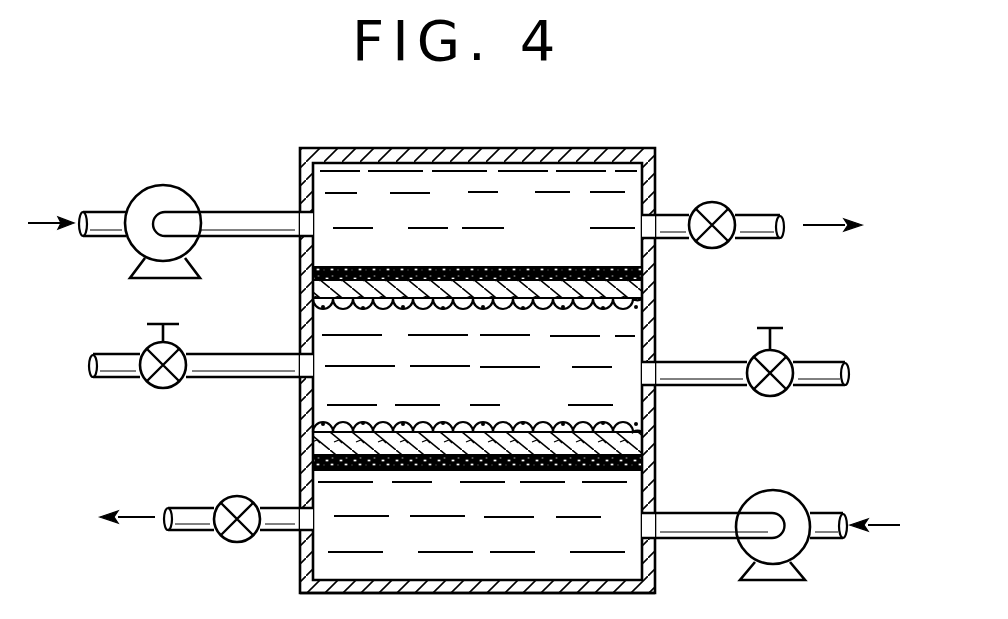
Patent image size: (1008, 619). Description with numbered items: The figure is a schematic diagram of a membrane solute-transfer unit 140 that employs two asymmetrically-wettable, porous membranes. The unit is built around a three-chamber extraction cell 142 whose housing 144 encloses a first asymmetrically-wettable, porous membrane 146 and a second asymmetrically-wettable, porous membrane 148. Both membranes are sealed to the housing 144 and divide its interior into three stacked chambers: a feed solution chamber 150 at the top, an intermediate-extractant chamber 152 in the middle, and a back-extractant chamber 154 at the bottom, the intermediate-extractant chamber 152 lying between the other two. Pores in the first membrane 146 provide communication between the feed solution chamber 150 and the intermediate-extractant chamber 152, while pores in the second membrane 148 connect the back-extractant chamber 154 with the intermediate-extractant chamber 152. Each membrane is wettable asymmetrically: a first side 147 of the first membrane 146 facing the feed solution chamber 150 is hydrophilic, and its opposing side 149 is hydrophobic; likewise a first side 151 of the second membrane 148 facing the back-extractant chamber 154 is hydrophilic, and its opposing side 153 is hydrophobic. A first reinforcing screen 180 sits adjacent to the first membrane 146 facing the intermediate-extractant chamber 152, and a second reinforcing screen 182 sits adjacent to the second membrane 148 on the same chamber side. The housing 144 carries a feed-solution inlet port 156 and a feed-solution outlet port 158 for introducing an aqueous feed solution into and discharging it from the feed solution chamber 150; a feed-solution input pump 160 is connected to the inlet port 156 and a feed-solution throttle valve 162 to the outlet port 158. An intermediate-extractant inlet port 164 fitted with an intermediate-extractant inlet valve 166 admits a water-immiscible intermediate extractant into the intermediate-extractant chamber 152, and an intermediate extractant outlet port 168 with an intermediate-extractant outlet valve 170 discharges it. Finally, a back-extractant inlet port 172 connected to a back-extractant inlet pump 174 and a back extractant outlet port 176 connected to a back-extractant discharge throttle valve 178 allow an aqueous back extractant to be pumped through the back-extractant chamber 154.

The membrane solute-transfer unit 140 is at (764, 114).
The three-chamber extraction cell 142 is at (622, 150).
The housing 144 is at (300, 588).
The first asymmetrically-wettable, porous membrane 146 is at (460, 262).
The first side of the first membrane 147 is at (524, 266).
The second asymmetrically-wettable, porous membrane 148 is at (462, 470).
The opposing side of the first membrane 149 is at (396, 307).
The feed solution chamber 150 is at (456, 227).
The first side of the second membrane 151 is at (568, 470).
The intermediate-extractant chamber 152 is at (448, 368).
The opposing side of the second membrane 153 is at (500, 425).
The back-extractant chamber 154 is at (448, 550).
The feed-solution inlet port 156 is at (313, 223).
The feed-solution outlet port 158 is at (640, 218).
The feed-solution input pump 160 is at (190, 193).
The feed-solution throttle valve 162 is at (727, 202).
The intermediate-extractant inlet port 164 is at (313, 365).
The intermediate-extractant inlet valve 166 is at (168, 388).
The intermediate extractant outlet port 168 is at (640, 373).
The intermediate-extractant outlet valve 170 is at (789, 352).
The back-extractant inlet port 172 is at (640, 528).
The back-extractant inlet pump 174 is at (785, 490).
The back extractant outlet port 176 is at (314, 520).
The back-extractant discharge throttle valve 178 is at (245, 498).
The first reinforcing screen 180 is at (545, 310).
The second reinforcing screen 182 is at (440, 392).